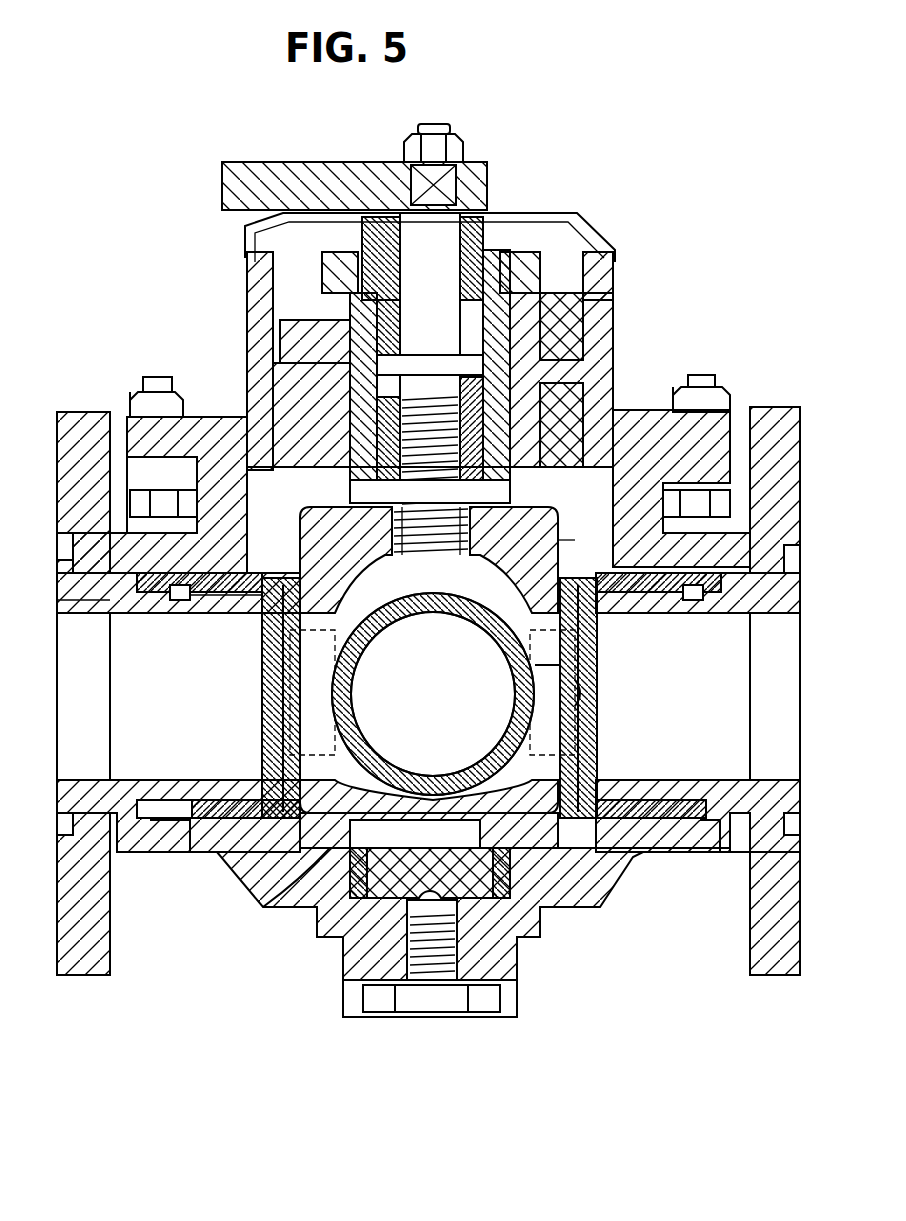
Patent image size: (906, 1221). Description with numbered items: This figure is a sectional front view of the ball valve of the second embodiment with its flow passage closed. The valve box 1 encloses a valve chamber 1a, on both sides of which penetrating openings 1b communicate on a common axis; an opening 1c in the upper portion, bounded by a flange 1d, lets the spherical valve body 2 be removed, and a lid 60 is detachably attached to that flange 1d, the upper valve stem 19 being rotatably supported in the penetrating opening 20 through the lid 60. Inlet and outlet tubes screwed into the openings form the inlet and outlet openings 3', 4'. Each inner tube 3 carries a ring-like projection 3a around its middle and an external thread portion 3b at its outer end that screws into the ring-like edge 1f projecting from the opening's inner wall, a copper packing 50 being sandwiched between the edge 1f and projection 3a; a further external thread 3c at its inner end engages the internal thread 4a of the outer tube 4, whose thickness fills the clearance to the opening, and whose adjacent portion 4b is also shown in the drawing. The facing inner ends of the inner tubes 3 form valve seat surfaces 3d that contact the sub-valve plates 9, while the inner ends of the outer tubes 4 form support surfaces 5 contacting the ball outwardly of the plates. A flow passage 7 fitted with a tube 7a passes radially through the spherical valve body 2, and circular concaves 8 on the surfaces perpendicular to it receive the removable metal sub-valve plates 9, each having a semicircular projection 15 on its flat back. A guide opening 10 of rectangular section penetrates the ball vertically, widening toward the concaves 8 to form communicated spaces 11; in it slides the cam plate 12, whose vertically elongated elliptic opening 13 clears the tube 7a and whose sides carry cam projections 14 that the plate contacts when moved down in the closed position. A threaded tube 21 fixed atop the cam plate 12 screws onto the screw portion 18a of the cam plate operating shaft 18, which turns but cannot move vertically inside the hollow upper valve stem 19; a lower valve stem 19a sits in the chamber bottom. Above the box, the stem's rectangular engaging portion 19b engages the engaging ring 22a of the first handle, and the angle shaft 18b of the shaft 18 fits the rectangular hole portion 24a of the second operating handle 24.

The valve box 1 is at (255, 882).
The valve chamber 1a is at (290, 860).
The penetrating opening 1b is at (110, 685).
The opening 1c is at (240, 435).
The flange 1d is at (130, 440).
The ring-like edge 1f is at (70, 580).
The spherical valve body 2 is at (570, 833).
The inner tube 3 is at (428, 712).
The inlet opening 3' is at (789, 624).
The ring-like projection 3a is at (155, 852).
The external thread portion 3b is at (120, 600).
The external thread 3c is at (212, 605).
The valve seat surface 3d is at (272, 770).
The outer tube 4 is at (429, 695).
The outlet opening 4' is at (76, 749).
The internal thread 4a is at (230, 598).
The seal ring flange 4b is at (278, 573).
The support surface 5 is at (150, 805).
The flow passage 7 is at (443, 718).
The tube 7a is at (470, 610).
The circular concave 8 is at (280, 550).
The sub-valve plate 9 is at (280, 750).
The guide opening 10 is at (565, 540).
The communicated space 11 is at (578, 592).
The cam plate 12 is at (528, 507).
The elliptic opening 13 is at (375, 575).
The cam projection 14 is at (560, 665).
The projection 15 is at (575, 693).
The cam plate operating shaft 18 is at (330, 272).
The screw portion 18a is at (385, 375).
The angle shaft 18b is at (410, 165).
The upper valve stem 19 is at (530, 310).
The lower valve stem 19a is at (470, 880).
The engaging portion 19b is at (490, 240).
The penetrating opening 20 is at (560, 430).
The threaded tube 21 is at (460, 615).
The engaging ring 22a is at (590, 235).
The second operating handle 24 is at (262, 178).
The rectangular hole portion 24a is at (466, 168).
The packing 50 is at (730, 852).
The lid 60 is at (650, 410).